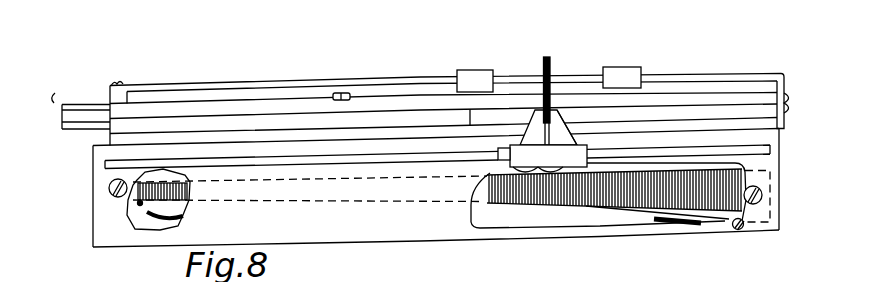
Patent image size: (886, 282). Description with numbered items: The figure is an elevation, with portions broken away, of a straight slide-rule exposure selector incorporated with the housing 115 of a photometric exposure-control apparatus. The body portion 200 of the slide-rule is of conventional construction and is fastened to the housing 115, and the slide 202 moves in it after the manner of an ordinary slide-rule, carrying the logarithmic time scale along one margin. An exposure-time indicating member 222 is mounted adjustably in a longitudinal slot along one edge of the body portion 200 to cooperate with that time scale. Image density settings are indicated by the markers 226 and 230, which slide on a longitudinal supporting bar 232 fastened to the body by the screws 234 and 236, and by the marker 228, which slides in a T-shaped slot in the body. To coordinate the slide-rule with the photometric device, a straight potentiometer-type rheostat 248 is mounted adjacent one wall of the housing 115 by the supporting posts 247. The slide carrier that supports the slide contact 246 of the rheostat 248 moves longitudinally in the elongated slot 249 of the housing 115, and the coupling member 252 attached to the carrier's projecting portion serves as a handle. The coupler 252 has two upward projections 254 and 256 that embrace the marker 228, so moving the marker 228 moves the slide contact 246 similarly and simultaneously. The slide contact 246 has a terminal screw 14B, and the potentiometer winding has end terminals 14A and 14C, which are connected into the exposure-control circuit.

The housing 115 is at (93, 185).
The body portion 200 is at (110, 140).
The slide 202 is at (52, 84).
The screw 234 is at (123, 82).
The longitudinal supporting bar 232 is at (338, 80).
The exposure-time indicating member 222 is at (333, 97).
The marker 226 is at (458, 70).
The marker 230 is at (624, 67).
The screw 236 is at (791, 97).
The elongated slot 249 is at (257, 159).
The upward projection 254 is at (535, 122).
The upward projection 256 is at (560, 108).
The marker 228 is at (548, 57).
The coupling member 252 is at (570, 157).
The terminal screw 14B is at (498, 156).
The slide contact 246 is at (523, 176).
The potentiometer-type rheostat 248 is at (587, 207).
The end terminal 14A is at (738, 229).
The supporting post 247 is at (108, 192).
The end terminal 14C is at (140, 204).